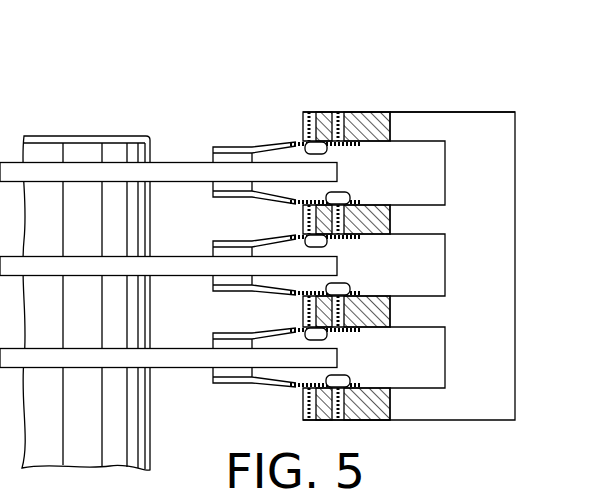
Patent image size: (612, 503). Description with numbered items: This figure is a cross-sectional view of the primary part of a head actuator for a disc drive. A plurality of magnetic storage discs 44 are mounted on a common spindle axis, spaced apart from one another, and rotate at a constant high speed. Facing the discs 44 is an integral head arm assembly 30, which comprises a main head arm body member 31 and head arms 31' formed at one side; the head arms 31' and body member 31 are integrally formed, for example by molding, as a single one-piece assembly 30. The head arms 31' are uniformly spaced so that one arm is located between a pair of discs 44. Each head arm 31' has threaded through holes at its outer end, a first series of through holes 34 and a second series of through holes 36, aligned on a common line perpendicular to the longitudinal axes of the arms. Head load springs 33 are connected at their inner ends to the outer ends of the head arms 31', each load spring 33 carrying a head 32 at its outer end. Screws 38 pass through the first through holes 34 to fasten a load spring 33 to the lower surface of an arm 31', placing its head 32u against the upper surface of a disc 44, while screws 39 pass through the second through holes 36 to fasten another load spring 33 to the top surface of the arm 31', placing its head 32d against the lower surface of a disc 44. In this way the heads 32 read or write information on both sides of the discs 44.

The integral head arm assembly 30 is at (430, 233).
The main head arm body member 31 is at (430, 266).
The head arm 31' is at (452, 79).
The head 32 is at (289, 197).
The upper head 32u is at (230, 148).
The lower head 32d is at (235, 183).
The head load spring 33 is at (268, 145).
The first through hole 34 is at (317, 112).
The second through hole 36 is at (340, 112).
The screw 38 is at (327, 150).
The screw 39 is at (349, 193).
The magnetic storage disc 44 is at (163, 166).